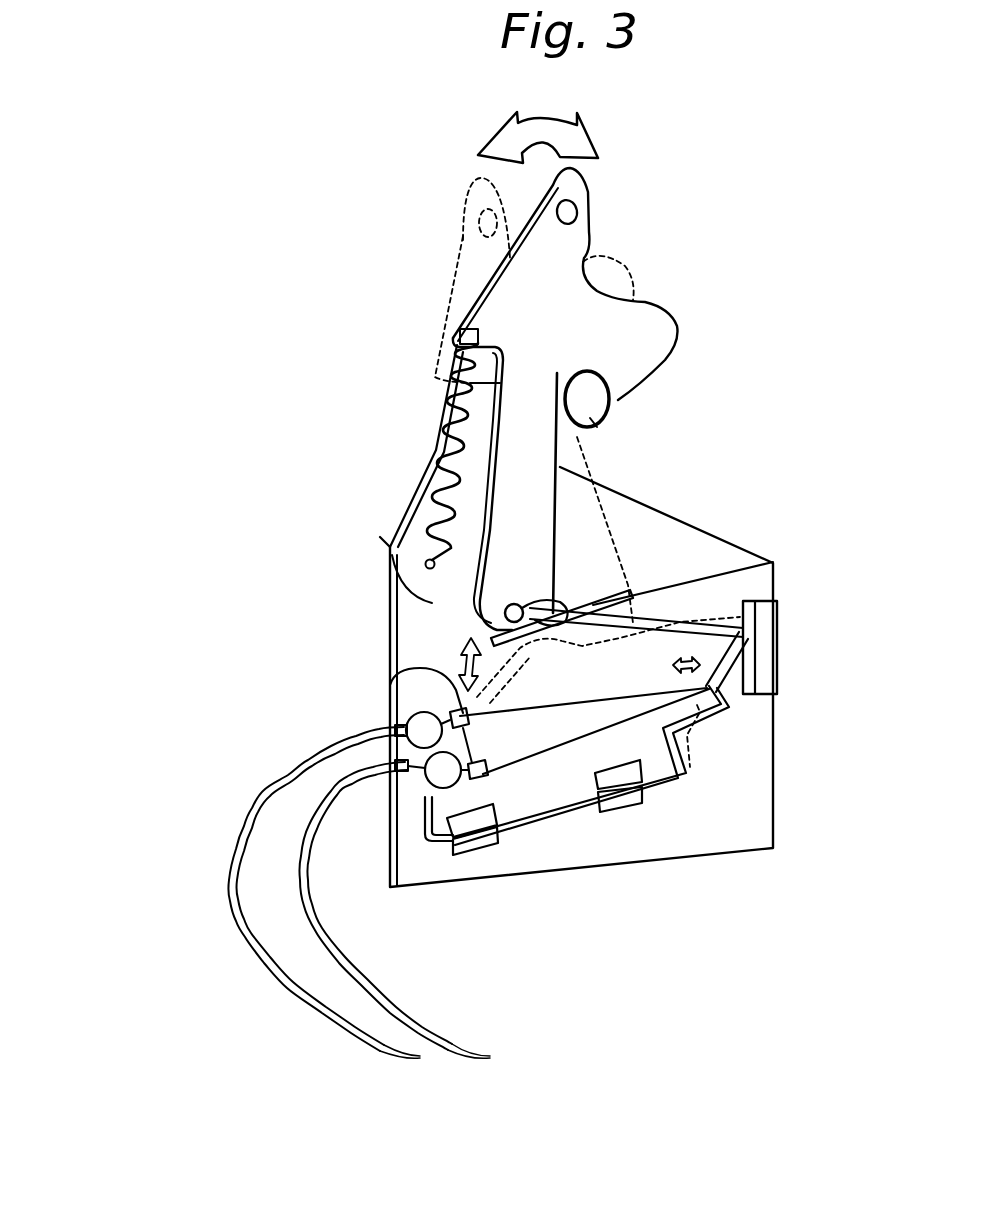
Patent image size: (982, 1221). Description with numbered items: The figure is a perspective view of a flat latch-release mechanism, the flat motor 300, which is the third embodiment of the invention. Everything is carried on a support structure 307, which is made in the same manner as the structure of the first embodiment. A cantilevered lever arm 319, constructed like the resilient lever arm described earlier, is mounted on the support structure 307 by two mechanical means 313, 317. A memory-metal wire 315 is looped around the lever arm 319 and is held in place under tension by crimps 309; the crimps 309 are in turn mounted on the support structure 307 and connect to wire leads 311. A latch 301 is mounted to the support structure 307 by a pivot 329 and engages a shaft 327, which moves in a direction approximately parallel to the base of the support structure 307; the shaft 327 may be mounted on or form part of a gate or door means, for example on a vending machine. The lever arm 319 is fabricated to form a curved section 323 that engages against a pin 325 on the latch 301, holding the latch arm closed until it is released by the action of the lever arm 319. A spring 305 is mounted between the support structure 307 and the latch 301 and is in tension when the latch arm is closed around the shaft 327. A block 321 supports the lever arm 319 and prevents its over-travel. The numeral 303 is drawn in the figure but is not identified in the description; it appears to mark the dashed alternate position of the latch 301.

The flat motor 300 is at (191, 577).
The latch 301 is at (530, 303).
The handle alternate position 303 is at (455, 293).
The spring 305 is at (447, 378).
The support structure 307 is at (385, 541).
The crimps 309 is at (452, 712).
The wire leads 311 is at (340, 797).
The mechanical means 313 is at (483, 843).
The memory-metal wire 315 is at (523, 713).
The mechanical means 317 is at (633, 790).
The cantilevered lever arm 319 is at (773, 773).
The block 321 is at (761, 656).
The curved section 323 is at (620, 601).
The pin 325 is at (518, 606).
The shaft 327 is at (588, 426).
The pivot 329 is at (537, 397).